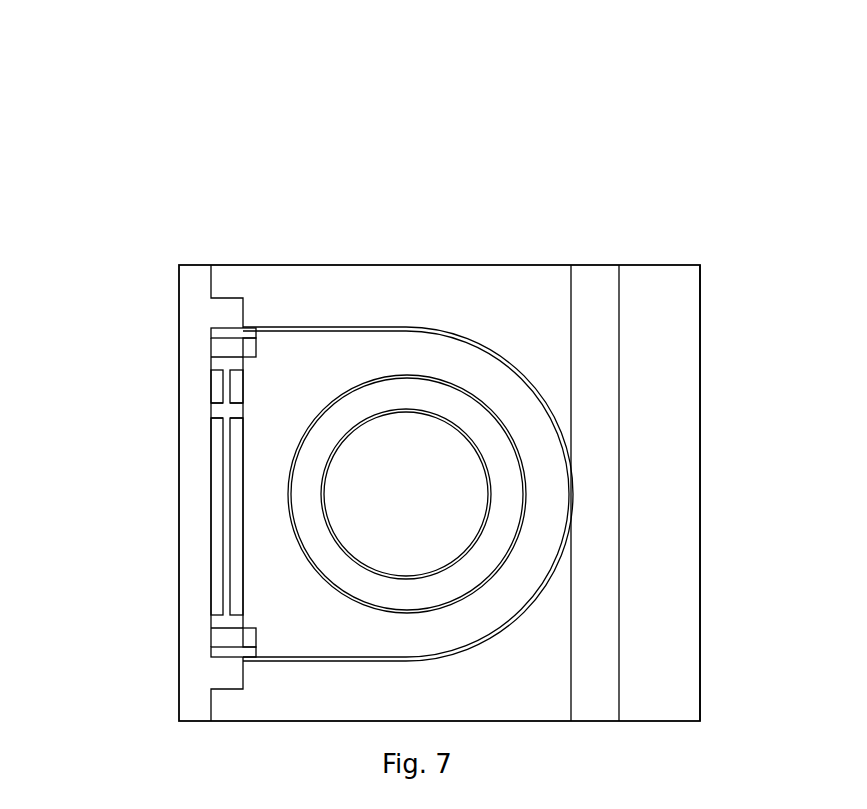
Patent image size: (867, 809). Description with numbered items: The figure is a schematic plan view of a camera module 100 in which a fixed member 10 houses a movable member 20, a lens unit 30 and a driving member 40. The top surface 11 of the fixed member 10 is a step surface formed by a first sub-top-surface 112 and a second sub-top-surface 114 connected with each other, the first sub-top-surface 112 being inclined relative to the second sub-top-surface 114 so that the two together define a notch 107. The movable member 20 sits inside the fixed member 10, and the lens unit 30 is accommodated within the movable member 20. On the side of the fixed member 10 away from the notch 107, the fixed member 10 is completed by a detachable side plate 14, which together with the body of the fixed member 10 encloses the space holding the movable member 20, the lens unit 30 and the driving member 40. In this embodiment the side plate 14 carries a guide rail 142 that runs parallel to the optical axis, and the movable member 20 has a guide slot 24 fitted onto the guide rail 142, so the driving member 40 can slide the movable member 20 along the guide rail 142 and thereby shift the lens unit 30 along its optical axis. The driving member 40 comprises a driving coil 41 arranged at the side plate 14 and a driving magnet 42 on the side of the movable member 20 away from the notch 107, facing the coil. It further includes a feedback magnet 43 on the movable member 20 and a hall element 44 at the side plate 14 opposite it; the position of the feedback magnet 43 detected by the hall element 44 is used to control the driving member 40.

The camera module 100 is at (358, 44).
The fixed member 10 is at (259, 288).
The top surface 11 is at (628, 427).
The first sub-top-surface 112 is at (592, 288).
The second sub-top-surface 114 is at (655, 295).
The notch 107 is at (652, 477).
The side plate 14 is at (149, 499).
The guide rail 142 is at (232, 634).
The guide slot 24 is at (240, 643).
The movable member 20 is at (353, 345).
The lens unit 30 is at (440, 407).
The driving member 40 is at (143, 484).
The driving coil 41 is at (215, 462).
The driving magnet 42 is at (230, 428).
The feedback magnet 43 is at (212, 380).
The hall element 44 is at (215, 400).